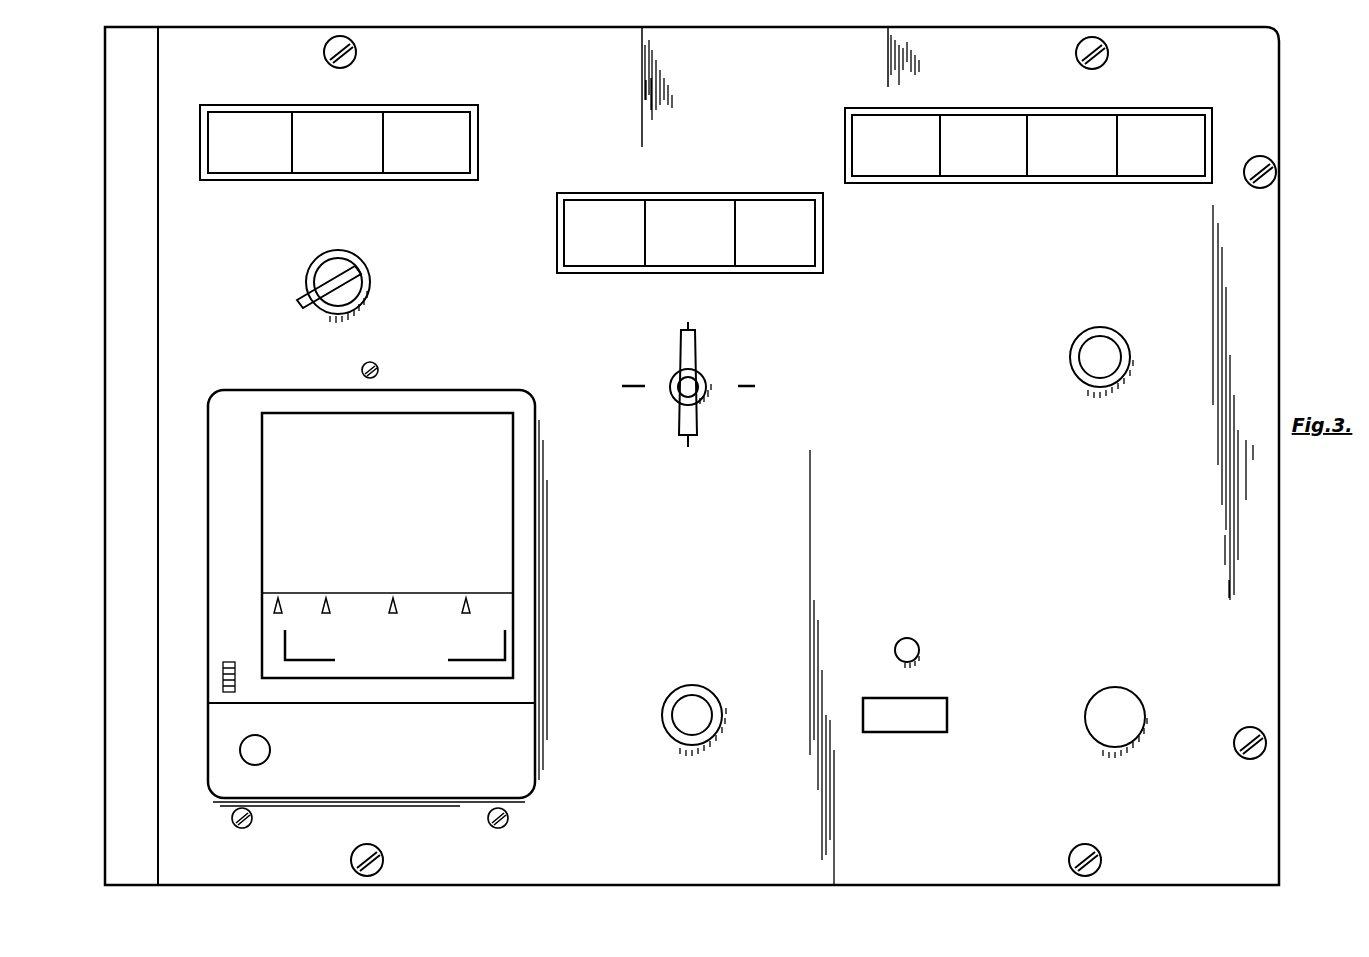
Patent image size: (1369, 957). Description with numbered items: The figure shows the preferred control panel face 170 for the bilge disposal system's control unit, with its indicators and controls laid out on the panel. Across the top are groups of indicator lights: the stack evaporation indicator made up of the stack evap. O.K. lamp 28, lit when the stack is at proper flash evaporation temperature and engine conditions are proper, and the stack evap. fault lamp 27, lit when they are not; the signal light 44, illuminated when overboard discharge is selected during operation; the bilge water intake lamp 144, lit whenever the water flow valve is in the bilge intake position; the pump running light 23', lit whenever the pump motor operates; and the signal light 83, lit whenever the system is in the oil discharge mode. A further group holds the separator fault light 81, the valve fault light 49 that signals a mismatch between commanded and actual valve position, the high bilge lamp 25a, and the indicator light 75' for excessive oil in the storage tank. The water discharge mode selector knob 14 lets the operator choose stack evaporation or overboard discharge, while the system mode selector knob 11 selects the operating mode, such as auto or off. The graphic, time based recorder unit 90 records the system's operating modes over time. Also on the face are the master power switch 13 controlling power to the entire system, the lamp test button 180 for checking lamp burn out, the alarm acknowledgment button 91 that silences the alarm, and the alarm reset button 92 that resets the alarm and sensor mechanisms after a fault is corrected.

The control panel face 170 is at (1268, 272).
The stack evap. O.K. lamp 28 is at (287, 112).
The stack evap. fault lamp 27 is at (363, 113).
The signal light 44 is at (456, 114).
The bilge water intake lamp 144 is at (572, 202).
The pump running light 23' is at (695, 211).
The signal light 83 is at (775, 260).
The separator fault light 81 is at (928, 170).
The valve fault light 49 is at (953, 122).
The high bilge lamp 25a is at (1092, 119).
The indicator light 75' is at (1161, 162).
The water discharge mode selector knob 14 is at (332, 270).
The graphic, time based recorder unit 90 is at (443, 400).
The system mode selector knob 11 is at (680, 375).
The lamp test button 180 is at (1110, 372).
The alarm reset button 92 is at (688, 715).
The master power switch 13 is at (893, 732).
The alarm acknowledgment button 91 is at (1090, 718).